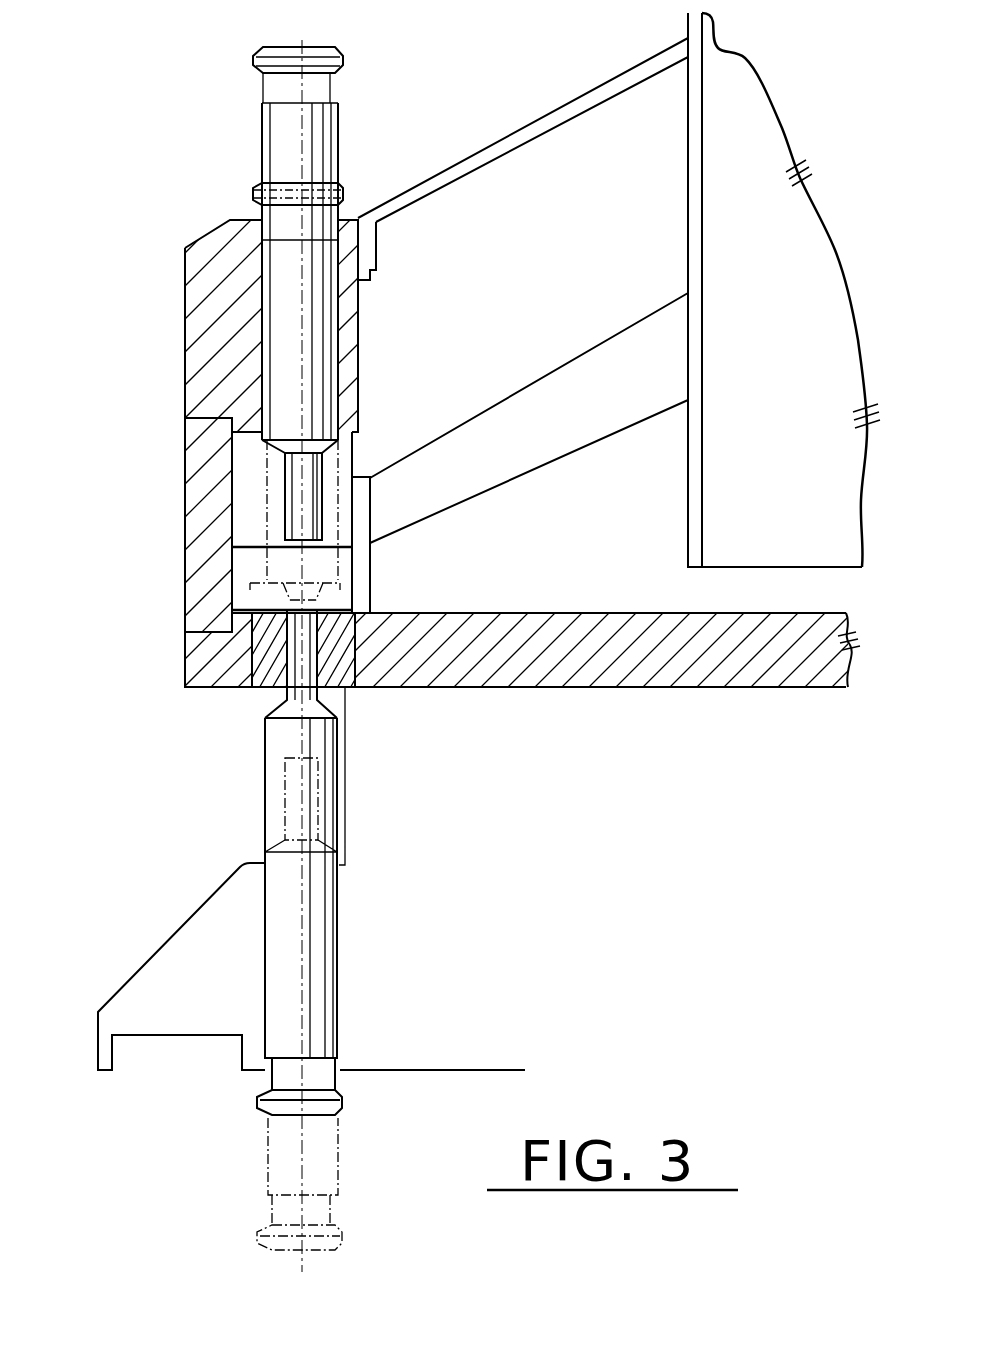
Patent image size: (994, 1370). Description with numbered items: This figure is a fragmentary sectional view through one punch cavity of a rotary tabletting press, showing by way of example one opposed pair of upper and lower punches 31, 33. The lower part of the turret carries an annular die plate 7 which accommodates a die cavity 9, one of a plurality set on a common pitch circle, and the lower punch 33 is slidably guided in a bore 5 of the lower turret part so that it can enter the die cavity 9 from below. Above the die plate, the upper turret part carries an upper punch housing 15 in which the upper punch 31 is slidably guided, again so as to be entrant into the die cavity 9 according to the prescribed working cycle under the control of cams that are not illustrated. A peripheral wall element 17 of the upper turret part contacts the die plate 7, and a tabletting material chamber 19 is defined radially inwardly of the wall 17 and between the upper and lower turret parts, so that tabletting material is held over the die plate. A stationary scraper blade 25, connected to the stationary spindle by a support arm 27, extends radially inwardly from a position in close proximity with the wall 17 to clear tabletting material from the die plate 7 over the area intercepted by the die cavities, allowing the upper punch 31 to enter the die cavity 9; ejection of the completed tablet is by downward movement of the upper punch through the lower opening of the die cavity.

The bore 5 is at (237, 938).
The die plate 7 is at (225, 665).
The die cavity 9 is at (354, 665).
The upper punch housing 15 is at (236, 298).
The peripheral wall element 17 is at (208, 519).
The tabletting material chamber 19 is at (275, 508).
The scraper blade 25 is at (256, 585).
The support arm 27 is at (482, 460).
The upper punch 31 is at (316, 344).
The lower punch 33 is at (307, 920).